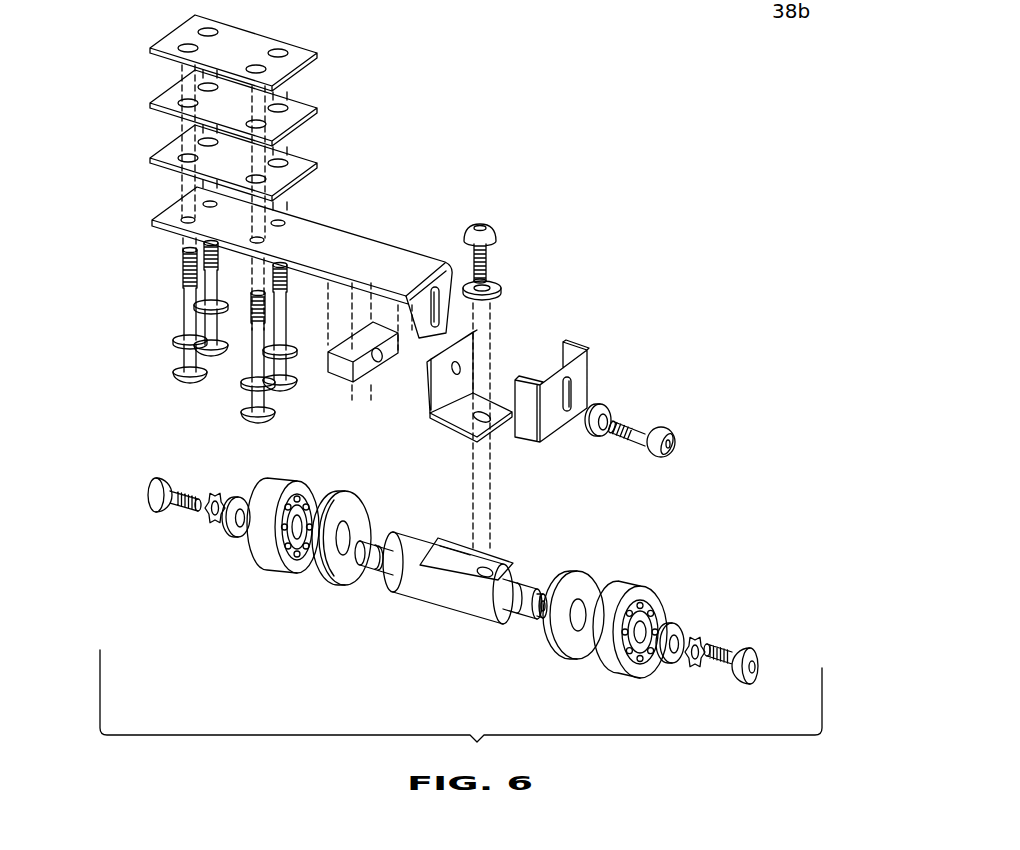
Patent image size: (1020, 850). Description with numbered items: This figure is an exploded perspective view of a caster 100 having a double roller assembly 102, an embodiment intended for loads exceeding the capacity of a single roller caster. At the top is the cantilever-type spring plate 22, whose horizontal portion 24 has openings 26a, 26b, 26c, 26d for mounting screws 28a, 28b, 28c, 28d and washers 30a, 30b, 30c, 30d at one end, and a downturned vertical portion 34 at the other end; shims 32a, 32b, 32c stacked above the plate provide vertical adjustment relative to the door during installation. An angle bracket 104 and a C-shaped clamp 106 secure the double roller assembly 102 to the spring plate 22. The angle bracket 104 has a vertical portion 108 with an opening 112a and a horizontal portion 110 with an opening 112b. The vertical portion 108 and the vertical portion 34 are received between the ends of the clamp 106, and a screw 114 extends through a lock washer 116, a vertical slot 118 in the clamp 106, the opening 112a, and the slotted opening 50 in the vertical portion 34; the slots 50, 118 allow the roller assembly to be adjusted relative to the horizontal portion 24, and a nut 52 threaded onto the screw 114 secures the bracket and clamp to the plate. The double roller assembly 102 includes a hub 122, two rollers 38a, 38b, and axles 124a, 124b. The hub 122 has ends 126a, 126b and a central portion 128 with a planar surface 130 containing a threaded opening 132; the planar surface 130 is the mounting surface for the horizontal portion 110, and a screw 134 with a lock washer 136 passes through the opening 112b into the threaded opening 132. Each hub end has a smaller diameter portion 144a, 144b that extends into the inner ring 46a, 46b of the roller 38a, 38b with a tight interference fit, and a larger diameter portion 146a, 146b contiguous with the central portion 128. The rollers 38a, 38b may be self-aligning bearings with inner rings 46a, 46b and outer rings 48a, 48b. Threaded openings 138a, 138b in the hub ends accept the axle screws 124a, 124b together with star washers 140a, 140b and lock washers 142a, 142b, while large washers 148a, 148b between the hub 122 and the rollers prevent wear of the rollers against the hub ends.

The shim 32a is at (177, 33).
The shim 32b is at (168, 92).
The shim 32c is at (168, 152).
The opening 26a is at (203, 203).
The opening 26b is at (181, 219).
The opening 26c is at (285, 222).
The opening 26d is at (264, 241).
The horizontal portion 24 is at (289, 249).
The spring plate 22 is at (417, 238).
The slotted opening 50 is at (437, 287).
The mounting screw 28a is at (204, 247).
The mounting screw 28b is at (184, 265).
The mounting screw 28c is at (288, 288).
The mounting screw 28d is at (256, 422).
The washer 30a is at (229, 308).
The washer 30b is at (174, 340).
The washer 30c is at (297, 356).
The washer 30d is at (272, 385).
The nut 52 is at (366, 366).
The vertical portion 34 is at (429, 350).
The screw 134 is at (497, 238).
The lock washer 136 is at (501, 288).
The caster 100 is at (397, 276).
The angle bracket 104 is at (451, 397).
The vertical portion 108 is at (472, 348).
The horizontal portion 110 is at (466, 428).
The opening 112a is at (461, 368).
The opening 112b is at (488, 424).
The C-shaped clamp 106 is at (583, 378).
The vertical slot 118 is at (571, 392).
The lock washer 116 is at (610, 415).
The screw 114 is at (657, 453).
The double roller assembly 102 is at (464, 594).
The axle 124a is at (148, 492).
The axle 124b is at (758, 652).
The star washer 140a is at (208, 522).
The star washer 140b is at (695, 634).
The lock washer 142a is at (234, 537).
The lock washer 142b is at (677, 623).
The roller 38a is at (292, 534).
The roller 38b is at (629, 632).
The outer ring 48a is at (272, 492).
The outer ring 48b is at (641, 586).
The inner ring 46a is at (312, 498).
The inner ring 46b is at (616, 684).
The large washer 148a is at (319, 575).
The large washer 148b is at (563, 660).
The threaded opening 138a is at (346, 597).
The threaded opening 138b is at (538, 622).
The hub end 126a is at (380, 563).
The hub end 126b is at (515, 599).
The smaller diameter portion 144a is at (384, 542).
The smaller diameter portion 144b is at (541, 598).
The larger diameter portion 146a is at (393, 537).
The larger diameter portion 146b is at (526, 578).
The hub 122 is at (462, 581).
The central portion 128 is at (430, 586).
The planar surface 130 is at (468, 552).
The threaded opening 132 is at (490, 567).